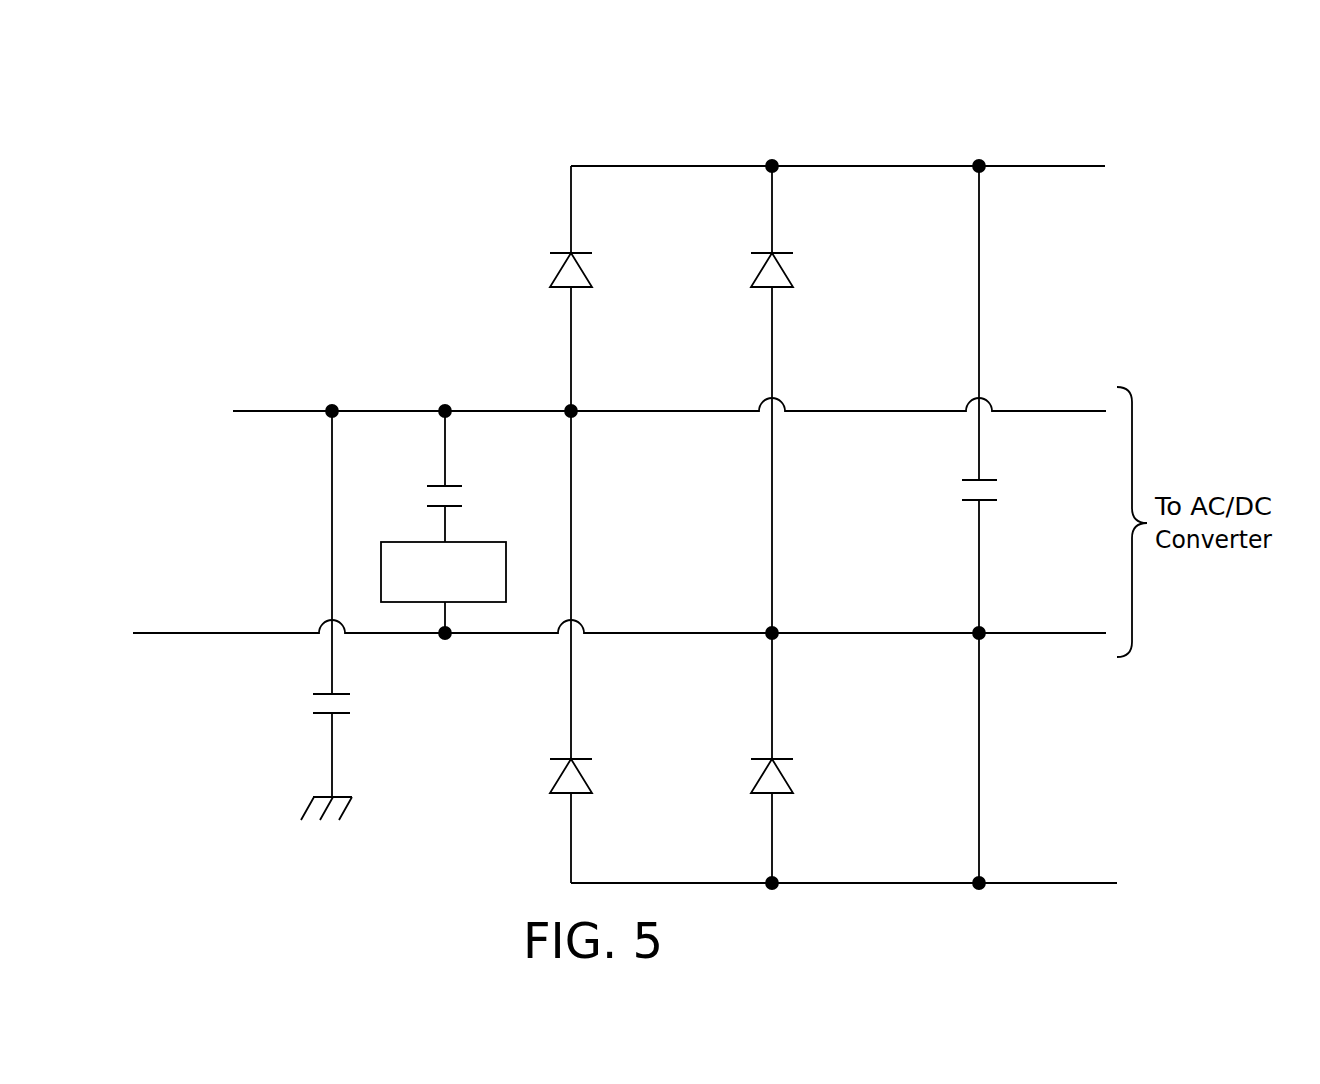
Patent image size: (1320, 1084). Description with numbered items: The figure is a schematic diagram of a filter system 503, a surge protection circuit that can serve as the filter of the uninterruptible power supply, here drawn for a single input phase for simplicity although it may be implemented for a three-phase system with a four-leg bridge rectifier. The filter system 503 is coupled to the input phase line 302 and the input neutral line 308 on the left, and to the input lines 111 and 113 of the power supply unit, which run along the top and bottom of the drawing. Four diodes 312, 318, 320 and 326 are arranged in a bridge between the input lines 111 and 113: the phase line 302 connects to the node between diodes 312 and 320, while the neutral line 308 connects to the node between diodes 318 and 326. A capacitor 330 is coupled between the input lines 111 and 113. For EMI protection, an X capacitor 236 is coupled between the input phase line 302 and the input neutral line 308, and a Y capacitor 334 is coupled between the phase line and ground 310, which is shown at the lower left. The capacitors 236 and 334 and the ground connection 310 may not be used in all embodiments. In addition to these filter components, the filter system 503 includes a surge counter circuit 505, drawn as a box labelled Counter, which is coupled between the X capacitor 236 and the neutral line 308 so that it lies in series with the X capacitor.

The filter system 503 is at (599, 116).
The input line 111 is at (882, 166).
The input line 113 is at (878, 883).
The input phase line 302 is at (283, 411).
The input neutral line 308 is at (253, 633).
The ground 310 is at (320, 797).
The diode 312 is at (562, 253).
The diode 318 is at (782, 253).
The diode 320 is at (562, 759).
The diode 326 is at (762, 759).
The capacitor 236 is at (457, 486).
The capacitor 330 is at (962, 480).
The capacitor 334 is at (320, 694).
The surge counter circuit 505 is at (478, 542).